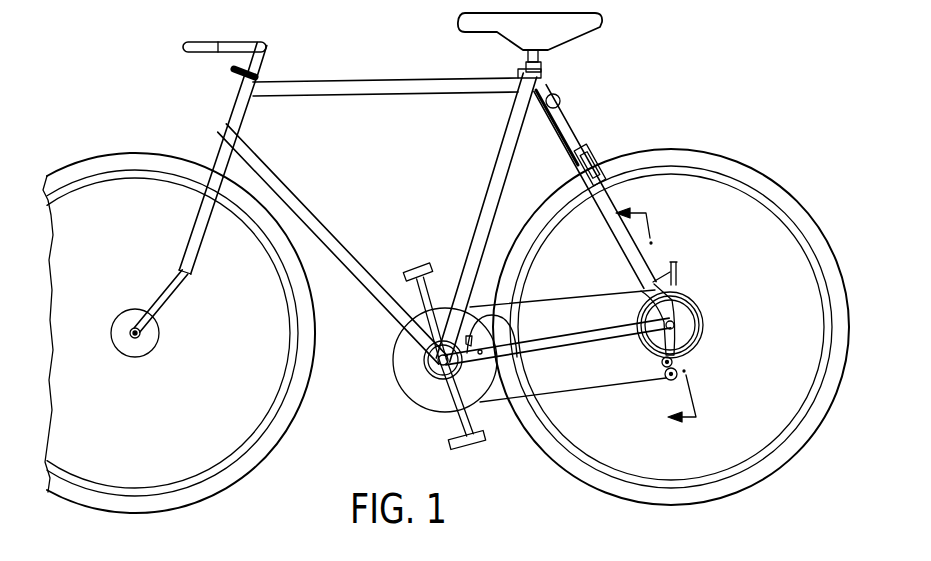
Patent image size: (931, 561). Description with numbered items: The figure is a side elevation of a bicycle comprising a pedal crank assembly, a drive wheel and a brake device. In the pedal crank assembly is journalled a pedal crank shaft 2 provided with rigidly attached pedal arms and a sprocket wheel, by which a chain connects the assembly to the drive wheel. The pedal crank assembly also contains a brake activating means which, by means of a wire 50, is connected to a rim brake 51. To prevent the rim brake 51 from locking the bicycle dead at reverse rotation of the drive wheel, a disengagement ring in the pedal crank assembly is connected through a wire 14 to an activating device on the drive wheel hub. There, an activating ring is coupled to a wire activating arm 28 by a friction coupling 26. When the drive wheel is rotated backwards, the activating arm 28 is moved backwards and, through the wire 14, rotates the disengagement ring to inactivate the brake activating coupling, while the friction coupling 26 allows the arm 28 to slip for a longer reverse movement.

The pedal crank shaft 2 is at (437, 366).
The wire 14 is at (598, 345).
The friction coupling 26 is at (703, 328).
The wire activating arm 28 is at (677, 281).
The wire 50 is at (505, 163).
The rim brake 51 is at (600, 146).